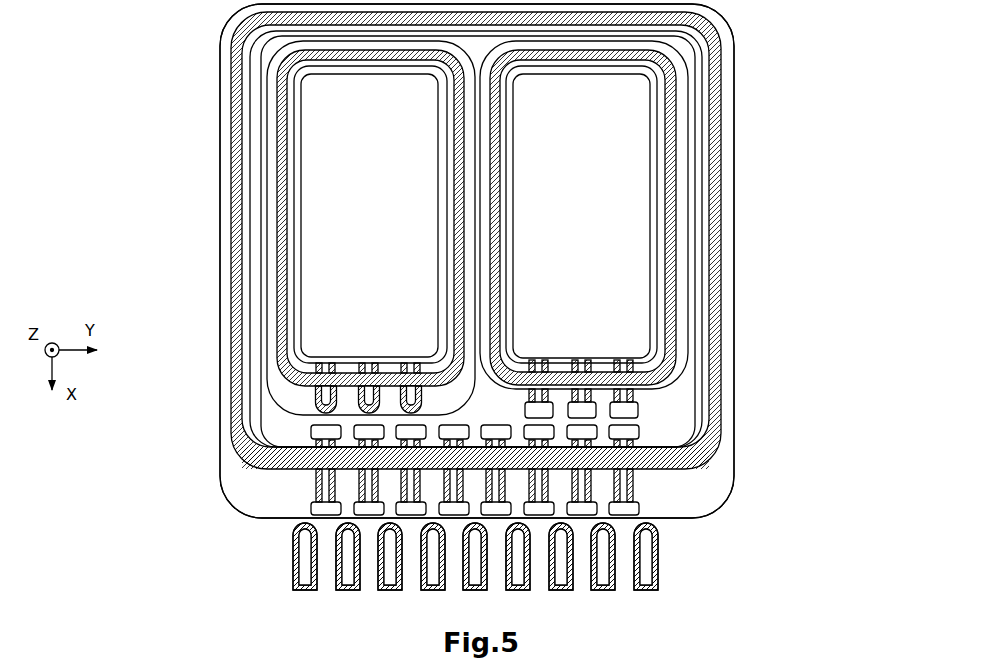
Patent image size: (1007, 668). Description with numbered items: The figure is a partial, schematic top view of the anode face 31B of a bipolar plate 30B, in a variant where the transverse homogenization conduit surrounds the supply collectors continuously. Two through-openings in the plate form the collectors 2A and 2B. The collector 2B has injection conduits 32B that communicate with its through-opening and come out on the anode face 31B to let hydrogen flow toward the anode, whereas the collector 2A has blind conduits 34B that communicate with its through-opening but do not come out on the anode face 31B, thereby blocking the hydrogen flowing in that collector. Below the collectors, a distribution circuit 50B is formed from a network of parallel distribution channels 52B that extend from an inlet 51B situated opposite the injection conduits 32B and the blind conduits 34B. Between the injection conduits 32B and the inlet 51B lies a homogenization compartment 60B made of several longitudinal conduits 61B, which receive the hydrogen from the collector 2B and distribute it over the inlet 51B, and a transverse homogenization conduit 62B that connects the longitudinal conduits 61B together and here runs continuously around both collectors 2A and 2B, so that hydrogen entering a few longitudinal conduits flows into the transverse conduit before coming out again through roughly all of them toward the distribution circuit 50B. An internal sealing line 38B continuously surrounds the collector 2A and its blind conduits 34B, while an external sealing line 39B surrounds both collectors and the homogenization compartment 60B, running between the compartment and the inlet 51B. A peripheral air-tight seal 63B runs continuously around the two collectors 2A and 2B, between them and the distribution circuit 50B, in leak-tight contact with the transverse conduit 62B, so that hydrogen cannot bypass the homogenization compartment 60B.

The bipolar plate 30B is at (181, 99).
The anode face 31B is at (222, 190).
The collector 2A is at (371, 228).
The collector 2B is at (584, 215).
The peripheral air-tight seal 63B is at (718, 302).
The injection conduits 32B is at (644, 408).
The longitudinal conduits 61B is at (644, 430).
The homogenization compartment 60B is at (812, 438).
The transverse homogenization conduit 62B is at (712, 460).
The blind conduits 34B is at (312, 405).
The internal sealing line 38B is at (310, 432).
The external sealing line 39B is at (245, 494).
The inlet 51B is at (683, 523).
The distribution circuit 50B is at (714, 566).
The distribution channels 52B is at (626, 589).